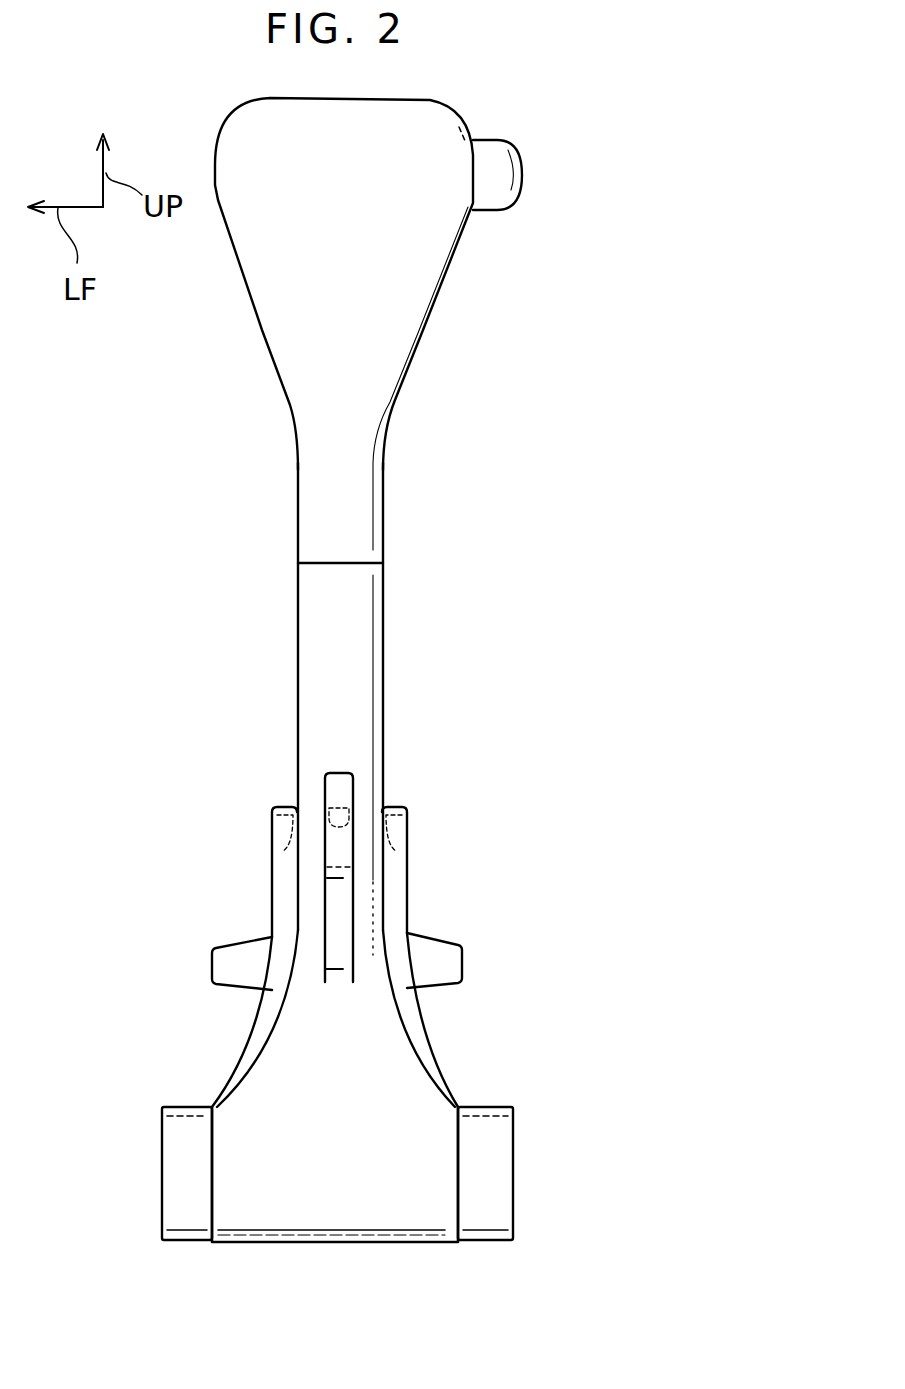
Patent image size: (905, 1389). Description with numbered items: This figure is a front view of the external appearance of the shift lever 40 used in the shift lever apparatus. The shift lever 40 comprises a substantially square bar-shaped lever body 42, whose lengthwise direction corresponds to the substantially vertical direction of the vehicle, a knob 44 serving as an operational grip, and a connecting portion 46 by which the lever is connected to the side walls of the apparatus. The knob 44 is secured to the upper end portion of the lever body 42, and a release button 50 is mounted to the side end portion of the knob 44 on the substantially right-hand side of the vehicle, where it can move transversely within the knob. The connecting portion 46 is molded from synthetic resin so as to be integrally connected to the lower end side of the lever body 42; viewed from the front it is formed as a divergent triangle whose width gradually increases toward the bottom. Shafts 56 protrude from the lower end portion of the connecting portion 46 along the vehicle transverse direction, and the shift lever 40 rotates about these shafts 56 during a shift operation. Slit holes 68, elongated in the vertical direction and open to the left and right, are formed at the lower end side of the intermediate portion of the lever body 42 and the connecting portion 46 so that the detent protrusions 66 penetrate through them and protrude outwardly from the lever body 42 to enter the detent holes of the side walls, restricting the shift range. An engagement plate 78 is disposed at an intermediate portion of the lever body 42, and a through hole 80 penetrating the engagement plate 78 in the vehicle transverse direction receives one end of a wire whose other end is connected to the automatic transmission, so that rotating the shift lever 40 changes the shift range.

The shift lever 40 is at (478, 303).
The lever body 42 is at (383, 708).
The knob 44 is at (407, 380).
The connecting portion 46 is at (400, 1245).
The release button 50 is at (497, 195).
The shafts 56 is at (172, 1183).
The detent protrusions 66 is at (228, 950).
The slit holes 68 is at (275, 851).
The engagement plate 78 is at (355, 790).
The through hole 80 is at (327, 825).